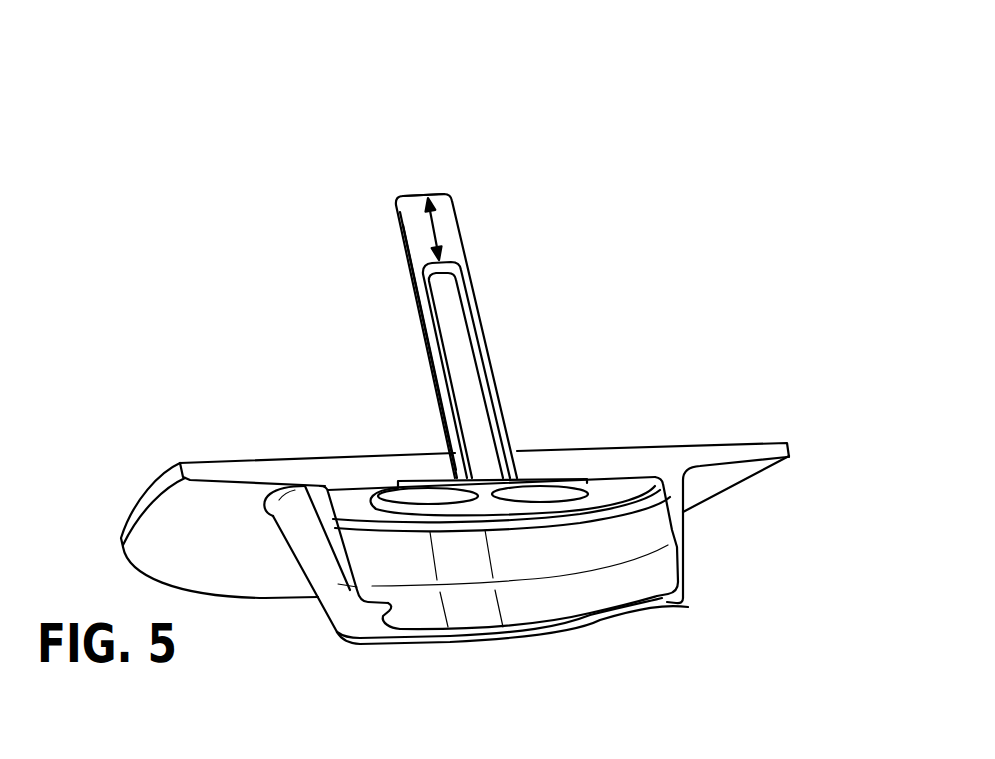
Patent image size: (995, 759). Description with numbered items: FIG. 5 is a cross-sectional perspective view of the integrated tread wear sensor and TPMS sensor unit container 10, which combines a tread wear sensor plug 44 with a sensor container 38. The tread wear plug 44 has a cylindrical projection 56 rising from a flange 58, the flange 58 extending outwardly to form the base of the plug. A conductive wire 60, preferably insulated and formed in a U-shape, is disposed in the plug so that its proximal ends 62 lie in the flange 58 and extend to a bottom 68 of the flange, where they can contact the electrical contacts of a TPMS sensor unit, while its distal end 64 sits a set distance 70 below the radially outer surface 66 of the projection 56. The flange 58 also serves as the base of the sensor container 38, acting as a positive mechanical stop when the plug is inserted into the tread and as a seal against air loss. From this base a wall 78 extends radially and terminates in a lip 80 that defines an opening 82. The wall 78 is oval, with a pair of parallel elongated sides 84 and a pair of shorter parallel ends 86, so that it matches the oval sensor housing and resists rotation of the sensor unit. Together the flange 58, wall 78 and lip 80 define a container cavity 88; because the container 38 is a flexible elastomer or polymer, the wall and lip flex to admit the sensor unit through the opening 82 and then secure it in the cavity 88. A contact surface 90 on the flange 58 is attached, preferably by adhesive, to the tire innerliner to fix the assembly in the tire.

The integrated tread wear sensor and TPMS sensor unit container 10 is at (663, 170).
The sensor container 38 is at (695, 609).
The tread wear sensor plug 44 is at (461, 210).
The cylindrical projection 56 is at (463, 240).
The flange 58 is at (580, 458).
The conductive wire 60 is at (468, 307).
The proximal ends 62 is at (410, 483).
The distal end 64 is at (437, 264).
The radially outer surface 66 is at (418, 194).
The bottom 68 is at (655, 492).
The set distance 70 is at (430, 224).
The wall 78 is at (686, 525).
The lip 80 is at (663, 598).
The opening 82 is at (446, 632).
The elongated sides 84 is at (377, 594).
The ends 86 is at (342, 561).
The container cavity 88 is at (470, 610).
The contact surface 90 is at (298, 457).